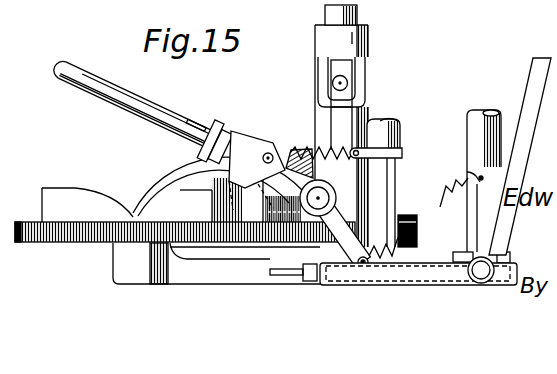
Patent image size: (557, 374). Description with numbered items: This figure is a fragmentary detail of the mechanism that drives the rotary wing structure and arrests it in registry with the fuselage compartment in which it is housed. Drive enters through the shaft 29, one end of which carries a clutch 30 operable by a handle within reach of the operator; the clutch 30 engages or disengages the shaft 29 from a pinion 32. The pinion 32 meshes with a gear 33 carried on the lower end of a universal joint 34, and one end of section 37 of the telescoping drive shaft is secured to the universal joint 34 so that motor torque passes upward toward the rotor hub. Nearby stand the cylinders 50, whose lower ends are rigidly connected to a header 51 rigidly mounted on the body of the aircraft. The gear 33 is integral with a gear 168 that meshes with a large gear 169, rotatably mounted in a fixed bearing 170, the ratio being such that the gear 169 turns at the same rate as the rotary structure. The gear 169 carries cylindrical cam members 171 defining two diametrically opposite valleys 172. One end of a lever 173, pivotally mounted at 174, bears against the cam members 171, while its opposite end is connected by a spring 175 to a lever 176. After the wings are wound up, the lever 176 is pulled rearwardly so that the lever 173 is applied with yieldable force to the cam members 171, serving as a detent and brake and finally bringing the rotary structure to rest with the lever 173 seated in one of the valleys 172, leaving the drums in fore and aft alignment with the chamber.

The shaft 29 is at (130, 120).
The clutch 30 is at (222, 131).
The pinion 32 is at (298, 150).
The gear 33 is at (412, 214).
The universal joint 34 is at (350, 99).
The drive shaft section 37 is at (358, 15).
The cylinder 50 is at (395, 122).
The header 51 is at (443, 263).
The gear 168 is at (418, 236).
The large gear 169 is at (67, 239).
The fixed bearing 170 is at (147, 276).
The cylindrical cam member 171 is at (73, 202).
The valley 172 is at (130, 215).
The lever 173 is at (183, 182).
The pivot 174 is at (320, 197).
The spring 175 is at (462, 174).
The lever 176 is at (517, 148).